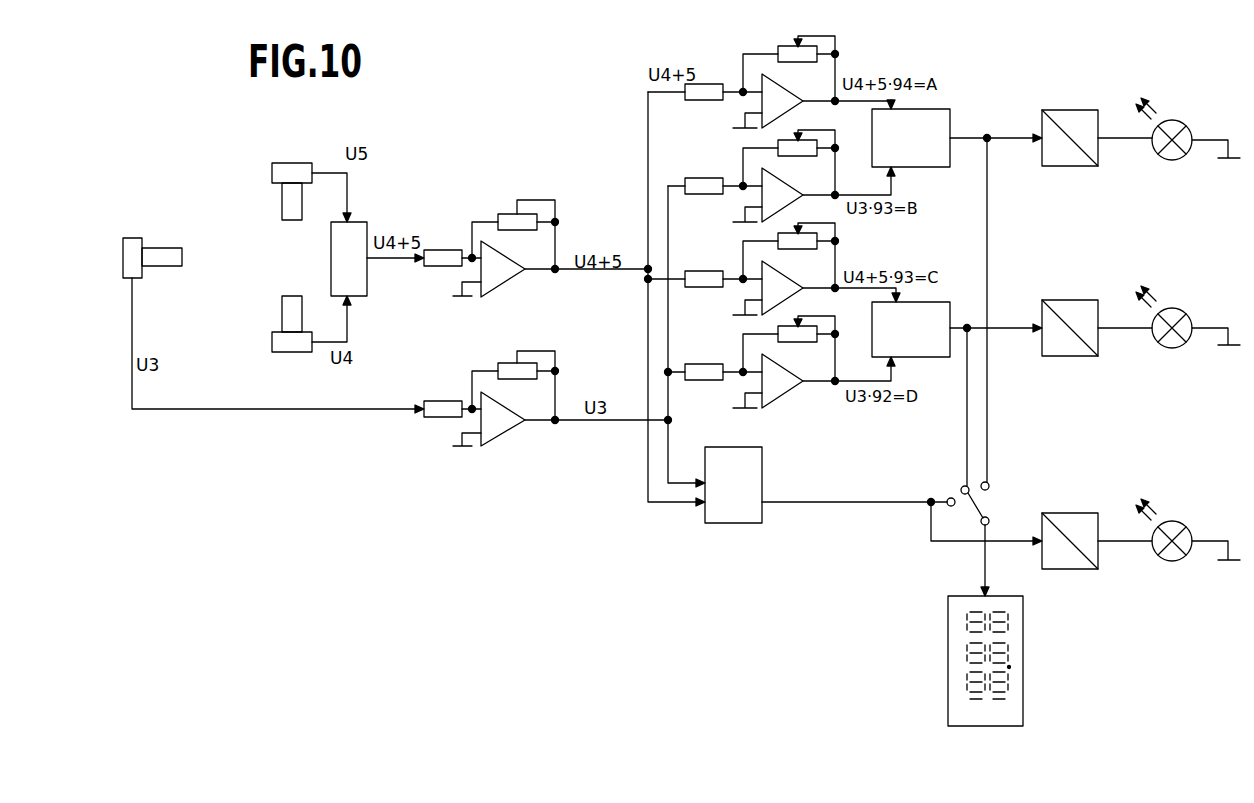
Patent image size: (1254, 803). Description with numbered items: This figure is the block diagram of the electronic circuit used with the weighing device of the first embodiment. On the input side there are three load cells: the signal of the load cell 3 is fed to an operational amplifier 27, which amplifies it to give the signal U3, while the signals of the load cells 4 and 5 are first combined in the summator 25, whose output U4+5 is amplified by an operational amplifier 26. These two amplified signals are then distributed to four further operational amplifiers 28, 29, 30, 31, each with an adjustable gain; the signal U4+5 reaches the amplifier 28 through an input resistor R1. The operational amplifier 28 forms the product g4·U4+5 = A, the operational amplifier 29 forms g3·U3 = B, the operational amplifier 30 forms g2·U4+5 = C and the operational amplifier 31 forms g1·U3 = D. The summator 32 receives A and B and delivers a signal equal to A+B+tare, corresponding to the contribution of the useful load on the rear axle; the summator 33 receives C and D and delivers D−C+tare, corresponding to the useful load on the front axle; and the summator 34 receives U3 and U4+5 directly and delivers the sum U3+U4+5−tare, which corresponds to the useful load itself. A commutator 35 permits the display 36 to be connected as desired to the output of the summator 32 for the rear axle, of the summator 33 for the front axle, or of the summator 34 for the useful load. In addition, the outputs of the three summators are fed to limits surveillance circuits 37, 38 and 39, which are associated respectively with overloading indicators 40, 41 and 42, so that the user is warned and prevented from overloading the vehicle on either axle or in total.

The load cell 3 is at (153, 246).
The load cell 4 is at (282, 312).
The load cell 5 is at (282, 200).
The summator 25 is at (331, 236).
The operational amplifier 26 is at (497, 263).
The operational amplifier 27 is at (497, 413).
The operational amplifier 28 is at (782, 99).
The operational amplifier 29 is at (782, 193).
The operational amplifier 30 is at (782, 286).
The operational amplifier 31 is at (782, 379).
The summator 32 is at (942, 112).
The summator 33 is at (943, 313).
The summator 34 is at (762, 487).
The commutator 35 is at (985, 502).
The display 36 is at (1017, 675).
The limits surveillance circuit 37 is at (1100, 92).
The limits surveillance circuit 38 is at (1076, 305).
The limits surveillance circuit 39 is at (1098, 495).
The overloading indicator 40 is at (1186, 128).
The overloading indicator 41 is at (1188, 317).
The overloading indicator 42 is at (1190, 508).
The input resistor R1 is at (700, 64).